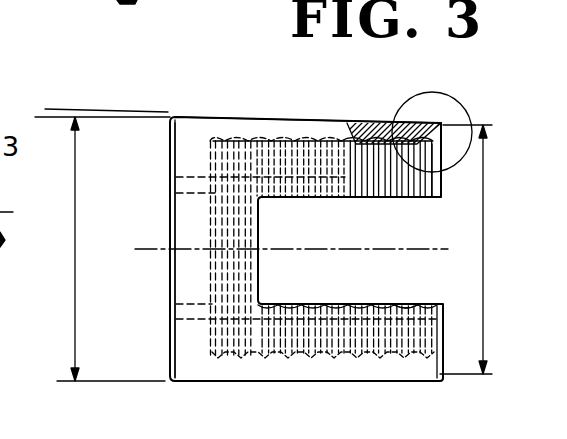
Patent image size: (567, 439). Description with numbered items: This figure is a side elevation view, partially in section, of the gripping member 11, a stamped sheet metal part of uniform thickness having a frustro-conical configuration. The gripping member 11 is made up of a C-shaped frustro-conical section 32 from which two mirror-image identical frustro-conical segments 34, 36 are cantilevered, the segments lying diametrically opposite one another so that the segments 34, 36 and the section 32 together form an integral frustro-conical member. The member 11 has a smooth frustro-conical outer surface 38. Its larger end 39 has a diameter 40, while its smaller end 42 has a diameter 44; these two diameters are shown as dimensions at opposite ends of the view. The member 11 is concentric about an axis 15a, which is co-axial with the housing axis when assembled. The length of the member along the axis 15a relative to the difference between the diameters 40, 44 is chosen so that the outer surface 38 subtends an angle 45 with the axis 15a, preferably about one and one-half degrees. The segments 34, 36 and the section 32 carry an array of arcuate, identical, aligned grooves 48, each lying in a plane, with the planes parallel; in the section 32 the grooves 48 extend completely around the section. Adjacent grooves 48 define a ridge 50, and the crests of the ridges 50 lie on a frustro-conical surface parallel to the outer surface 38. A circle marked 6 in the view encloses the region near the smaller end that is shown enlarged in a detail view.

The gripping member 11 is at (265, 101).
The detail circle of FIG. 6 is at (447, 90).
The outer surface 38 is at (196, 117).
The frustro-conical segment 34 is at (263, 126).
The frustro-conical segment 36 is at (267, 372).
The larger end 39 is at (169, 165).
The C-shaped frustro-conical section 32 is at (187, 276).
The smaller end 42 is at (443, 182).
The diameter 44 is at (466, 249).
The grooves 48 is at (214, 340).
The ridge 50 is at (412, 197).
The axis 15a is at (292, 214).
The diameter 40 is at (75, 246).
The angle 45 is at (45, 110).